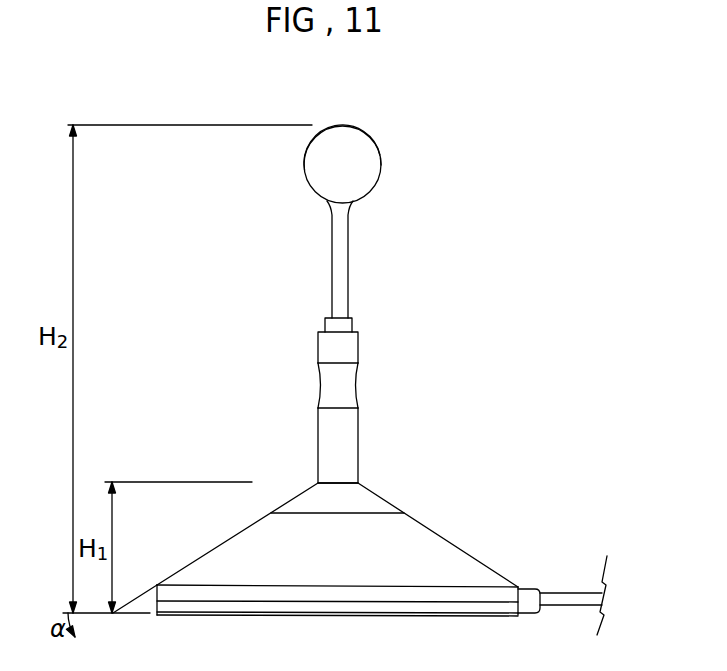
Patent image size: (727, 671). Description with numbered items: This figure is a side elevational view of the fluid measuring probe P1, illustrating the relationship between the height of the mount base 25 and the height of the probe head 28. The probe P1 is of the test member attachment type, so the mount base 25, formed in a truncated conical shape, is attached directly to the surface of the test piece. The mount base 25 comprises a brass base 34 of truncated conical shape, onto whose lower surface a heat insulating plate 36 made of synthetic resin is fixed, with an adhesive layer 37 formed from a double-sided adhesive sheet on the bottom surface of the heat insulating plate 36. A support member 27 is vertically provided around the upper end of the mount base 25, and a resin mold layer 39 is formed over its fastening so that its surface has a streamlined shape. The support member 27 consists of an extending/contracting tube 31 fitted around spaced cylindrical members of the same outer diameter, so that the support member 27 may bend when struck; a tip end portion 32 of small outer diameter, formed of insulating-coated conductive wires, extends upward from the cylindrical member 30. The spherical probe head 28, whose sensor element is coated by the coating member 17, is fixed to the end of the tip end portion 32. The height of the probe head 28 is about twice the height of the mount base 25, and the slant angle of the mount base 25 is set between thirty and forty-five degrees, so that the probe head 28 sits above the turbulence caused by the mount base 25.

The coating member 17 is at (343, 138).
The probe head 28 is at (370, 136).
The probe P1 is at (390, 157).
The tip end portion 32 is at (342, 257).
The cylindrical member 30 is at (352, 323).
The support member 27 is at (359, 342).
The extending/contracting tube 31 is at (355, 391).
The resin mold layer 39 is at (363, 497).
The base 34 is at (412, 528).
The mount base 25 is at (448, 542).
The heat insulating plate 36 is at (293, 605).
The adhesive layer 37 is at (353, 613).